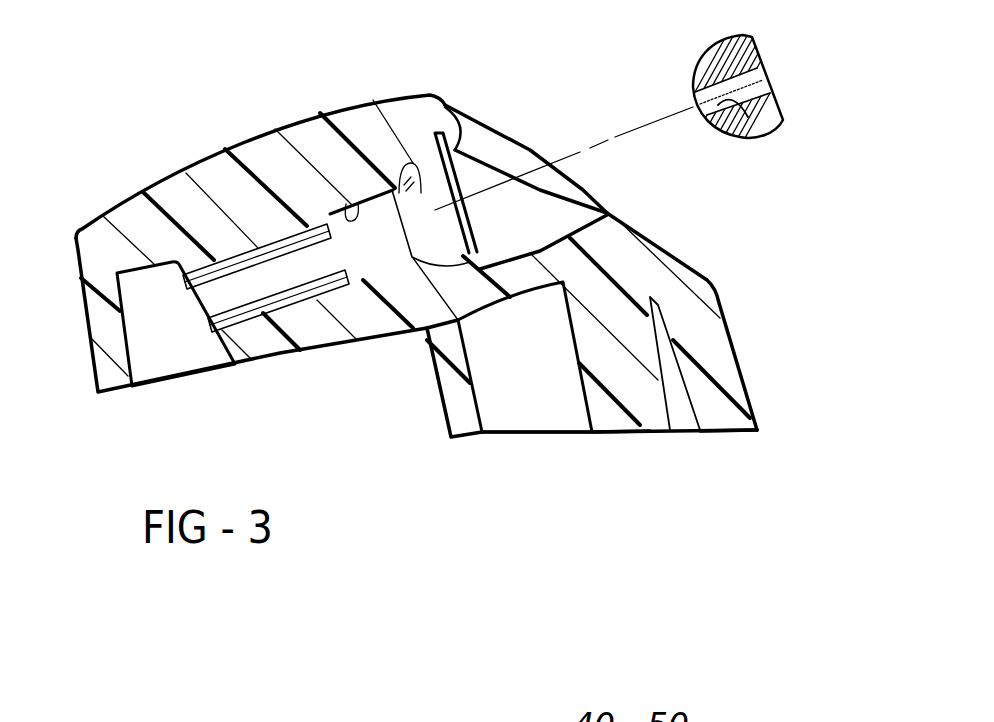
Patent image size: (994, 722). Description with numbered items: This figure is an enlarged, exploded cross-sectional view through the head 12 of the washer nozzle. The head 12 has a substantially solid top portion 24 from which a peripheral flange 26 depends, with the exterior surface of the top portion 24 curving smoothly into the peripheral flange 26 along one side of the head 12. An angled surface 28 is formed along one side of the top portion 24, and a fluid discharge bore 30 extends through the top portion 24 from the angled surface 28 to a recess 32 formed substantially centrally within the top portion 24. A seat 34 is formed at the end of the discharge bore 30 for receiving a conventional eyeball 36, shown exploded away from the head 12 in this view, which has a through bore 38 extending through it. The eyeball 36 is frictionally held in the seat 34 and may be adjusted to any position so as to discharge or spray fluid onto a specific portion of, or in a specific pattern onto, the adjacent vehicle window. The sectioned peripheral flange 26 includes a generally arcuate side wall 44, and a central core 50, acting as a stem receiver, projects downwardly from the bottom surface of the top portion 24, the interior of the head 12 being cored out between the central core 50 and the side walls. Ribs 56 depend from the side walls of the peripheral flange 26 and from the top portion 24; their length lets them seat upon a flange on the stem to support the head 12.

The head 12 is at (221, 148).
The top portion 24 is at (177, 188).
The peripheral flange 26 is at (710, 357).
The angled surface 28 is at (607, 214).
The fluid discharge bores 30 is at (360, 203).
The recess 32 is at (225, 357).
The seat 34 is at (412, 165).
The eyeball 36 is at (703, 53).
The through bore 38 is at (737, 138).
The arcuate side wall 44 is at (721, 420).
The central core 50 is at (466, 433).
The ribs 56 is at (622, 420).